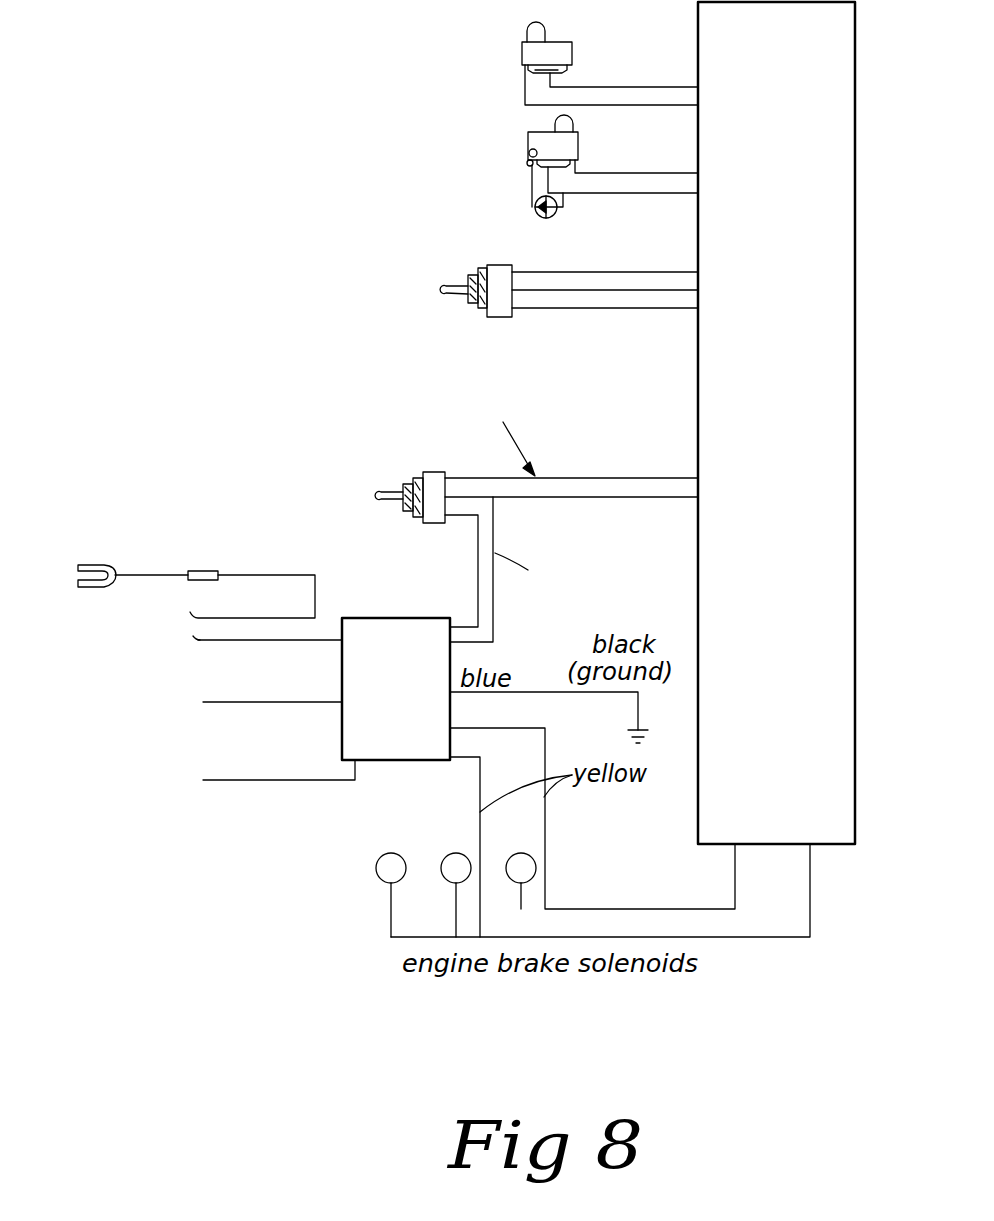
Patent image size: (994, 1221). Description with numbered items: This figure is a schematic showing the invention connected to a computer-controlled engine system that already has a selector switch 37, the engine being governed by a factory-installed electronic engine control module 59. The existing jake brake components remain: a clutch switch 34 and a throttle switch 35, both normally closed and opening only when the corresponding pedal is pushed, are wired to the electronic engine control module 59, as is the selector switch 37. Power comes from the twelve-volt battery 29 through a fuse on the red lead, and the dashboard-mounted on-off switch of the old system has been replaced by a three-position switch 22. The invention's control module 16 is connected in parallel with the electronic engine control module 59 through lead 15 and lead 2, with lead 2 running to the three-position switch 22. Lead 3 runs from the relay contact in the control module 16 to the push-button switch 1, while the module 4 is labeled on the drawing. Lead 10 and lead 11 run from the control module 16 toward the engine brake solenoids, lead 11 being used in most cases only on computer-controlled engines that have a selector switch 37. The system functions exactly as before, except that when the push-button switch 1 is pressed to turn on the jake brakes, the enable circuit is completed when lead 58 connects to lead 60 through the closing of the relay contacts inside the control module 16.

The electronic engine control module 59 is at (792, 113).
The throttle switch 35 is at (522, 50).
The clutch switch 34 is at (530, 135).
The selector switch 37 is at (497, 311).
The three-position switch 22 is at (424, 523).
The lead 58 is at (612, 478).
The lead 60 is at (607, 497).
The lead 3 is at (315, 575).
The battery 29 is at (110, 588).
The push-button switch 1 is at (191, 623).
The module 4 is at (326, 689).
The control module 16 is at (435, 762).
The lead 2 is at (478, 575).
The lead 15 is at (493, 632).
The lead 10 is at (545, 853).
The lead 11 is at (480, 860).